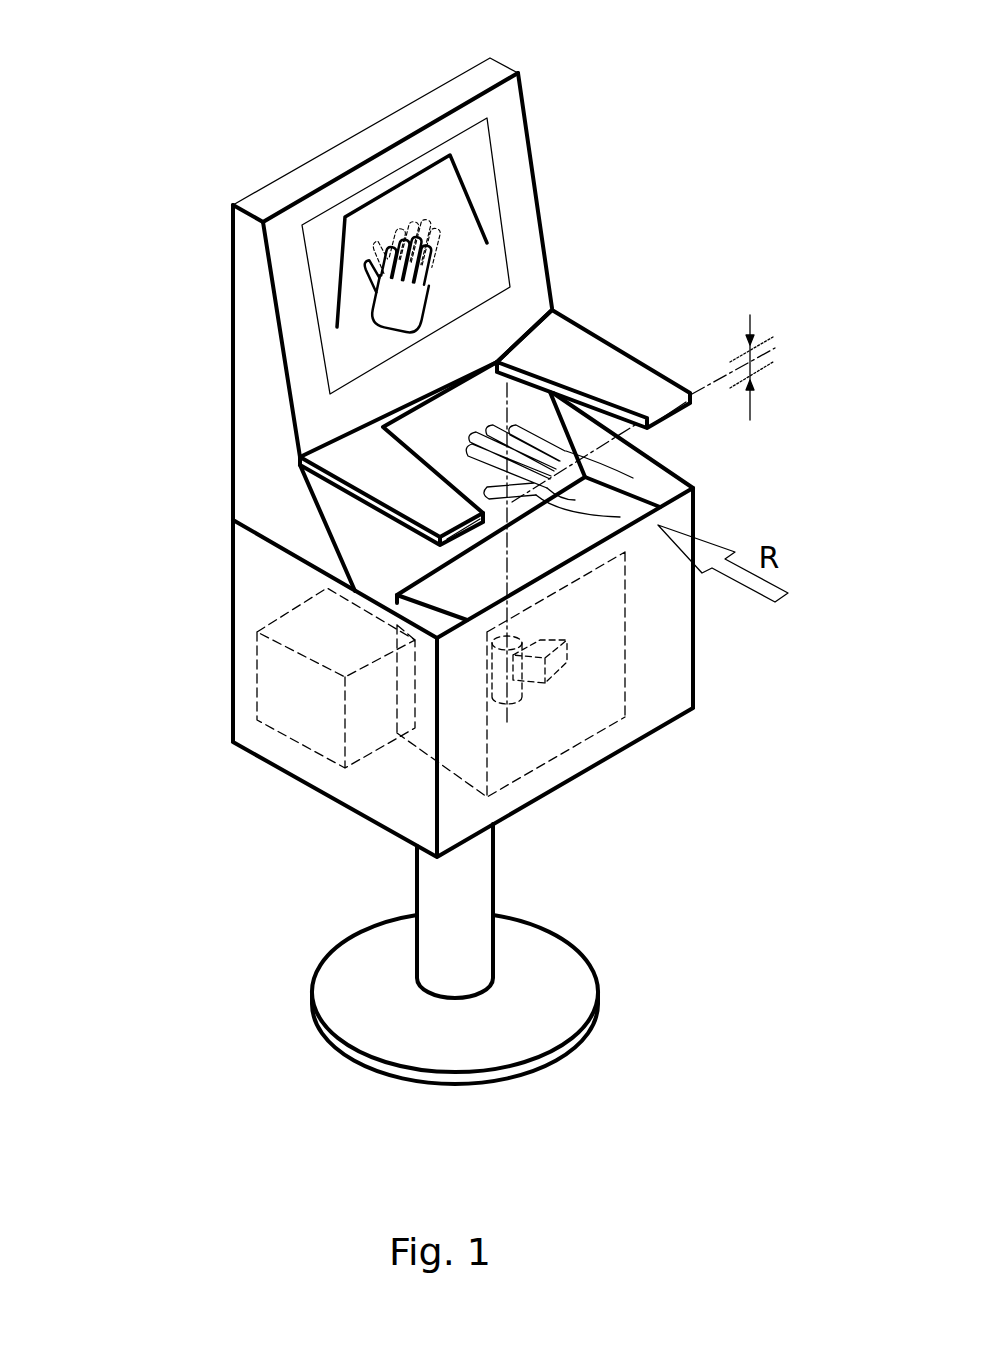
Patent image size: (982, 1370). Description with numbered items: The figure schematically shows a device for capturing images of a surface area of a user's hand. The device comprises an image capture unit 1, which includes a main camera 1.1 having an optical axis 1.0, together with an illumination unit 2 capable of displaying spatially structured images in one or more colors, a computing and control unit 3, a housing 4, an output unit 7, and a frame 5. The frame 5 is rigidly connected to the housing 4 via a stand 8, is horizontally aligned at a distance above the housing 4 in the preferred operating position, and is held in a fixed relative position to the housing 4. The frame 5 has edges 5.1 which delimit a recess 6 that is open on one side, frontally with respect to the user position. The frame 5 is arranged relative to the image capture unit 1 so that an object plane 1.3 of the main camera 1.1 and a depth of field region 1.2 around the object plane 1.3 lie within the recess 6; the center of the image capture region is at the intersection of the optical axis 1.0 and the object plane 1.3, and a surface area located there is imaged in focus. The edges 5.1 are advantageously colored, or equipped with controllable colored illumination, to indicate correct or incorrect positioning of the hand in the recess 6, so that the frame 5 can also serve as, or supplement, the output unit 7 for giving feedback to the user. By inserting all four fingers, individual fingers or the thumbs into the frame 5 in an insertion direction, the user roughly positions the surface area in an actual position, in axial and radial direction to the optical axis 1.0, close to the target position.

The image capture unit 1 is at (437, 600).
The optical axis 1.0 is at (507, 556).
The main camera 1.1 is at (523, 697).
The depth of field region 1.2 is at (752, 383).
The object plane 1.3 is at (703, 387).
The illumination unit 2 is at (557, 660).
The computing and control unit 3 is at (292, 740).
The housing 4 is at (390, 782).
The frame 5 is at (392, 485).
The edges 5.1 is at (568, 387).
The recess 6 is at (443, 435).
The output unit 7 is at (368, 262).
The stand 8 is at (253, 297).